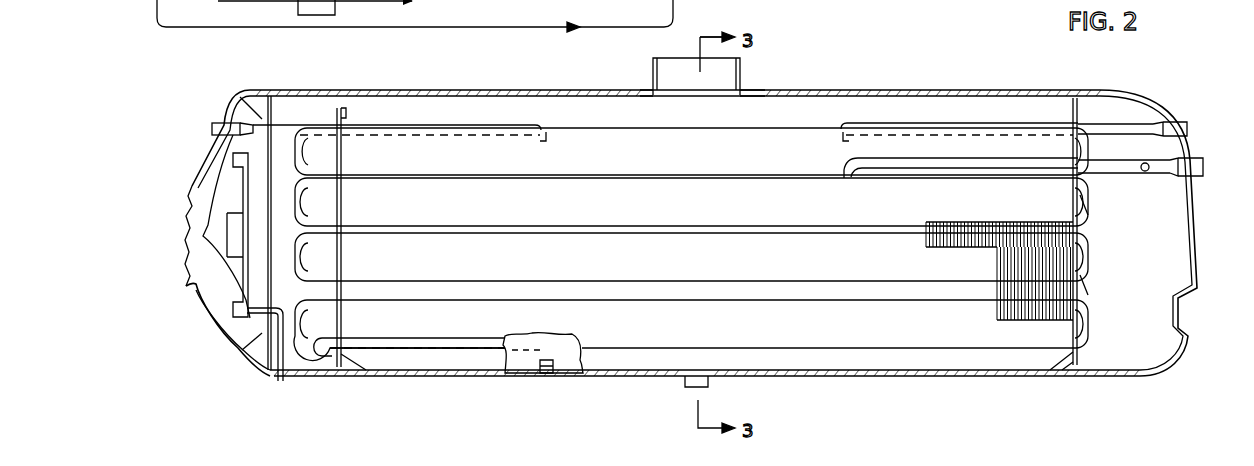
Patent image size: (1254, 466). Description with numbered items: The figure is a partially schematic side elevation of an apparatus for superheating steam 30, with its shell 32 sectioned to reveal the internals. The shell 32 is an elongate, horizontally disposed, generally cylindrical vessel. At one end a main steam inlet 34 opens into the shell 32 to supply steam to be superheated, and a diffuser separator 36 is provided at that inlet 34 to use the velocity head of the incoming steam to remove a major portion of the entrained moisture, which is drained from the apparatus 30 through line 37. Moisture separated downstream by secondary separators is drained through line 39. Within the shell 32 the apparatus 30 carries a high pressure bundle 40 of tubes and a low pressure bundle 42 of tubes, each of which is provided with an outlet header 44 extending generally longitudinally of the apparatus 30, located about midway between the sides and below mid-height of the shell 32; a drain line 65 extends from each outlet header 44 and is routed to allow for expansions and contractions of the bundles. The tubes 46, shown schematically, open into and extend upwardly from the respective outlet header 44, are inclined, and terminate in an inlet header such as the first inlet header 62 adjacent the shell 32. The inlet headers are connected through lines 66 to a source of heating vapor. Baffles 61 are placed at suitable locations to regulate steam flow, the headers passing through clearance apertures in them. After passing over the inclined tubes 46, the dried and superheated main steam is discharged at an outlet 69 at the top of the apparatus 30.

The apparatus for superheating steam 30 is at (1104, 78).
The shell 32 is at (887, 94).
The main steam inlet 34 is at (192, 291).
The diffuser separator 36 is at (227, 234).
The drain line 37 is at (273, 379).
The drain line 39 is at (688, 379).
The high pressure bundle of tubes 40 is at (930, 240).
The low pressure bundle of tubes 42 is at (997, 308).
The outlet header 44 is at (612, 259).
The tubes 46 is at (980, 230).
The baffles 61 is at (345, 150).
The first inlet header 62 is at (606, 164).
The drain line 65 is at (545, 376).
The lines 66 is at (231, 123).
The outlet 69 is at (742, 77).